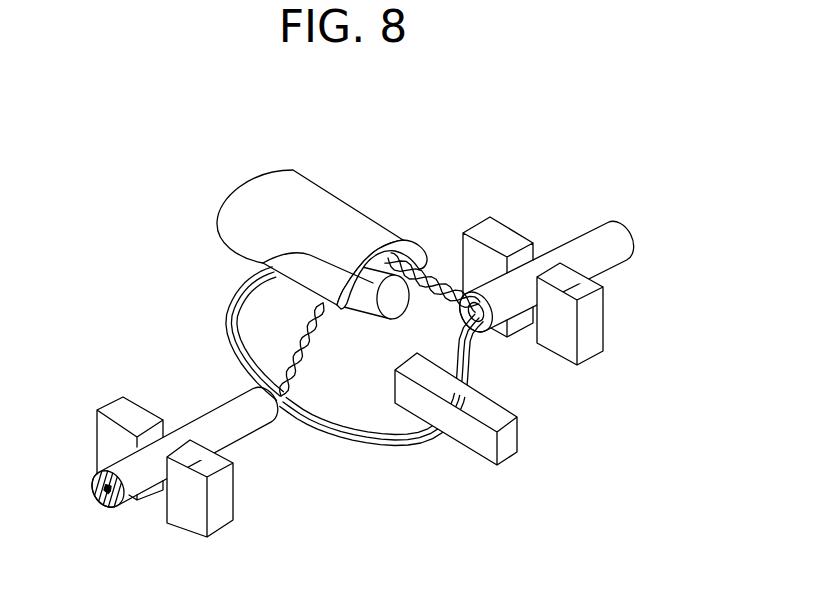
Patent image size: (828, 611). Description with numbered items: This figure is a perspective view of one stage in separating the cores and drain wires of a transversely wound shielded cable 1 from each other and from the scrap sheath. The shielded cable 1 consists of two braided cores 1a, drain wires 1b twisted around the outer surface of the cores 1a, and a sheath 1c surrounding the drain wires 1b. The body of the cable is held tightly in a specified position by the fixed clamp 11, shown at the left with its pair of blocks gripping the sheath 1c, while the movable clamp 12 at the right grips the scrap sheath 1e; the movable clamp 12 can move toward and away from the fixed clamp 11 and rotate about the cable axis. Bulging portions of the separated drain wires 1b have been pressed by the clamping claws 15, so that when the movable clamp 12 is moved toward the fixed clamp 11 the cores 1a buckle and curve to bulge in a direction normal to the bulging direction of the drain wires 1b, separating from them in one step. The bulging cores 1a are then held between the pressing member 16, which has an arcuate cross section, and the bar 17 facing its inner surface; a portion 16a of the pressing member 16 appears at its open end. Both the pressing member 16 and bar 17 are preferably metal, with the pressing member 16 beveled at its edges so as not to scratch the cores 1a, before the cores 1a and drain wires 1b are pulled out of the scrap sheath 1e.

The shielded cable 1 is at (411, 481).
The cores 1a is at (308, 352).
The drain wires 1b is at (308, 437).
The sheath 1c is at (237, 433).
The scrap sheath 1e is at (610, 240).
The fixed clamp 11 is at (198, 455).
The movable clamp 12 is at (569, 276).
The clamping claws 15 is at (487, 412).
The pressing member 16 is at (340, 217).
The inner cylinder of cover 16a is at (374, 316).
The bar 17 is at (258, 266).